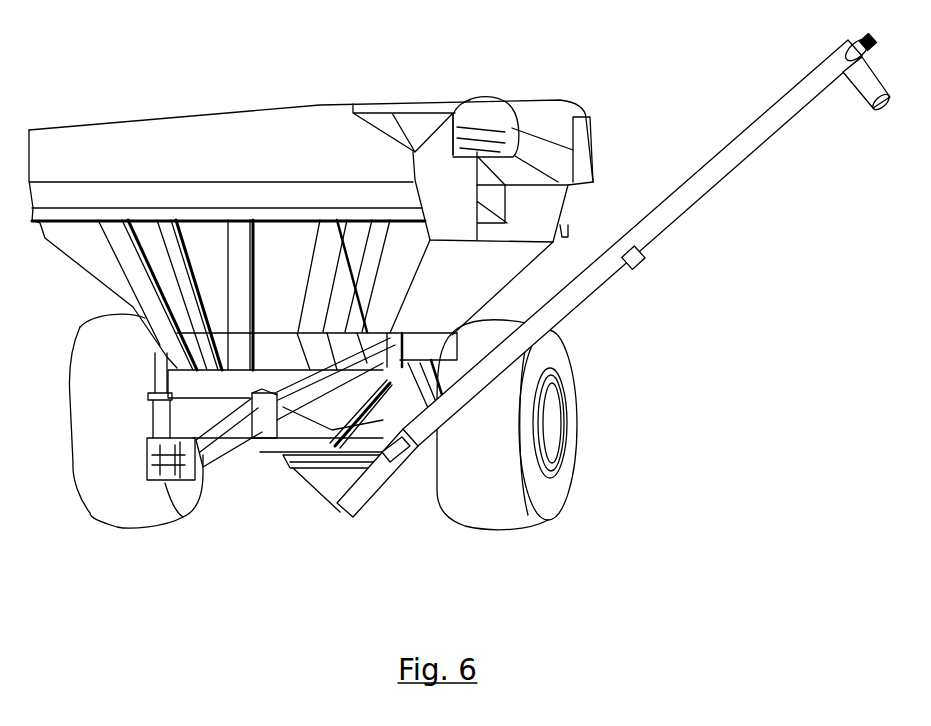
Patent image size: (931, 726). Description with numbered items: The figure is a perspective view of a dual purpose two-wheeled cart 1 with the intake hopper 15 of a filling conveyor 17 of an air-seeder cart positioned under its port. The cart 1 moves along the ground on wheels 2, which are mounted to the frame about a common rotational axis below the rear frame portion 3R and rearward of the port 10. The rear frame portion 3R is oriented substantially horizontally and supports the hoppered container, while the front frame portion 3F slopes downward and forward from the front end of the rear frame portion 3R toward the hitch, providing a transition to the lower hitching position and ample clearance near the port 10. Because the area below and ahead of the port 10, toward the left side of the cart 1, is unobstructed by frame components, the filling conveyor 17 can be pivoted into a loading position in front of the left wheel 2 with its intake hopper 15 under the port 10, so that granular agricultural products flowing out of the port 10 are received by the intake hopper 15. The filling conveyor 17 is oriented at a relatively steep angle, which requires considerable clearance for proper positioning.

The cart 1 is at (248, 93).
The wheels 2 is at (567, 500).
The front frame portion 3F is at (233, 455).
The rear frame portion 3R is at (435, 348).
The port 10 is at (303, 473).
The intake hopper 15 is at (348, 517).
The filling conveyor 17 is at (693, 210).